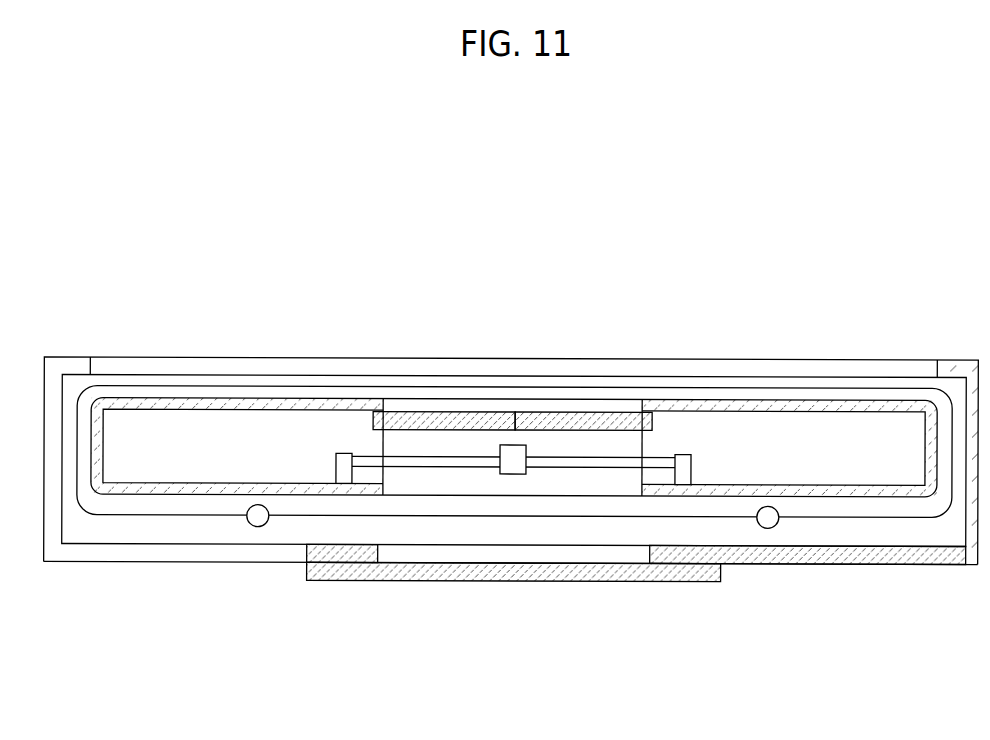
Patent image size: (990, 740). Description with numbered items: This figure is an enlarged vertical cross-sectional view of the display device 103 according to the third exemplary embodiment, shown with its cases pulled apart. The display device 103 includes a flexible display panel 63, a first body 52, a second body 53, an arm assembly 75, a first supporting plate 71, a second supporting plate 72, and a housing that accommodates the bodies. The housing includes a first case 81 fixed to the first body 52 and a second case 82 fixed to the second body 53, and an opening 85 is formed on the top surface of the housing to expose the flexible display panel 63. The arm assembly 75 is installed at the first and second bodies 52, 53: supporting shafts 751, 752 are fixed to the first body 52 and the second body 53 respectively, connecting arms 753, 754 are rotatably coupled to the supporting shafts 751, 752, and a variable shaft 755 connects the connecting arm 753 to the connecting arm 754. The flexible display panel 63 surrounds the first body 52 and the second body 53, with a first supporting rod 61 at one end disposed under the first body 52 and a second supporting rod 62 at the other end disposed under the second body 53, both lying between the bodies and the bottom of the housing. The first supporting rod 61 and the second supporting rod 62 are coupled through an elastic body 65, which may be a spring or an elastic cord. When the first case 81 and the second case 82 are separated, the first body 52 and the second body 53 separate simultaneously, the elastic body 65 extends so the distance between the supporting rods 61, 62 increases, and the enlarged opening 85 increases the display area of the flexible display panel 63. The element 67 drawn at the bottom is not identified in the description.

The display device 103 is at (522, 214).
The opening 85 is at (130, 357).
The first case 81 is at (123, 553).
The second case 82 is at (908, 557).
The flexible display panel 63 is at (182, 386).
The first body 52 is at (258, 405).
The second body 53 is at (827, 408).
The first supporting plate 71 is at (443, 413).
The second supporting plate 72 is at (540, 417).
The arm assembly 75 is at (523, 473).
The supporting shaft 751 is at (342, 457).
The supporting shaft 752 is at (682, 453).
The connecting arm 753 is at (415, 463).
The connecting arm 754 is at (605, 463).
The variable shaft 755 is at (517, 475).
The first supporting rod 61 is at (253, 527).
The second supporting rod 62 is at (771, 527).
The elastic body 65 is at (465, 517).
The bottom plate 67 is at (683, 575).